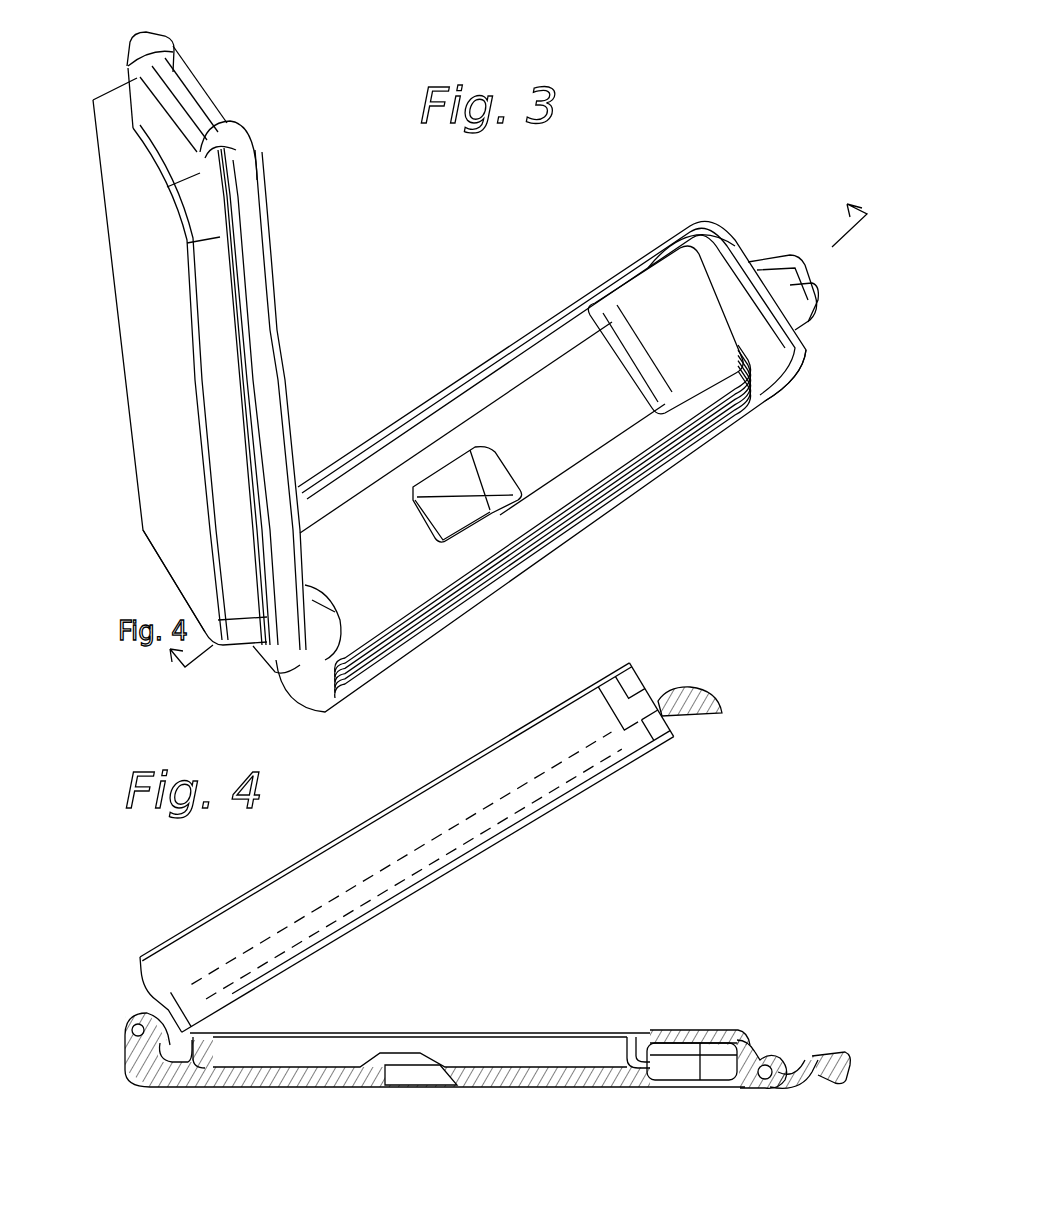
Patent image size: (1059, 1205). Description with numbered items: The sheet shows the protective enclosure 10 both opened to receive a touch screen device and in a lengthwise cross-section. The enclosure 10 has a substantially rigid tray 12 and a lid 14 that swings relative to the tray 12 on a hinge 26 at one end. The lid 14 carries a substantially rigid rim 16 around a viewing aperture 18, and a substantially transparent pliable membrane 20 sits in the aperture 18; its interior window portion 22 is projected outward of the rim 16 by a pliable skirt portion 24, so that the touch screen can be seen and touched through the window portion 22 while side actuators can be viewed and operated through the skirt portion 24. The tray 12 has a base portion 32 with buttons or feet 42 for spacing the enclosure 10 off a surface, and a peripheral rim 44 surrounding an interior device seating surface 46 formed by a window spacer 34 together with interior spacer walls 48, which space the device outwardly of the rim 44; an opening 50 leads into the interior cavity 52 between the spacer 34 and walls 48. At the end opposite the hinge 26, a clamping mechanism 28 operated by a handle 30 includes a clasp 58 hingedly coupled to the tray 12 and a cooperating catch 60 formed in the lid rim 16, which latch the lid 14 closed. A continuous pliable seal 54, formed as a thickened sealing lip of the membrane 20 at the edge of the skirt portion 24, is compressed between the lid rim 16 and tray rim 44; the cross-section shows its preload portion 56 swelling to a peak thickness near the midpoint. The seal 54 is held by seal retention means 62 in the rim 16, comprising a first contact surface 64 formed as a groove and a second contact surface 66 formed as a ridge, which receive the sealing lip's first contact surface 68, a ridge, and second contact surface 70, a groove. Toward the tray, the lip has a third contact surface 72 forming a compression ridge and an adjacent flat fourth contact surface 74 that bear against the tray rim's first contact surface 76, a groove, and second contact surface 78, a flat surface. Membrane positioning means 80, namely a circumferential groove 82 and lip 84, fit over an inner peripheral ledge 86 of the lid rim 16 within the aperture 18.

In FIG. 3, the protective enclosure 10 is at (751, 203).
In FIG. 4, the protective enclosure 10 is at (764, 595).
In FIG. 3, the tray 12 is at (733, 432).
In FIG. 4, the tray 12 is at (300, 1087).
In FIG. 3, the lid 14 is at (135, 50).
In FIG. 4, the lid 14 is at (125, 1027).
In FIG. 3, the rim 16 is at (250, 270).
In FIG. 4, the rim 16 is at (670, 717).
In FIG. 3, the viewing aperture 18 is at (227, 193).
In FIG. 4, the viewing aperture 18 is at (620, 730).
In FIG. 3, the pliable membrane 20 is at (163, 567).
In FIG. 4, the pliable membrane 20 is at (600, 683).
In FIG. 3, the interior window portion 22 is at (138, 347).
In FIG. 4, the interior window portion 22 is at (407, 797).
In FIG. 3, the pliable skirt portion 24 is at (222, 363).
In FIG. 4, the pliable skirt portion 24 is at (446, 832).
In FIG. 4, the hinge 26 is at (137, 1033).
In FIG. 3, the clamping mechanism 28 is at (806, 357).
In FIG. 4, the clamping mechanism 28 is at (773, 1097).
In FIG. 3, the handle 30 is at (800, 294).
In FIG. 4, the handle 30 is at (837, 1063).
In FIG. 3, the base portion 32 is at (519, 454).
In FIG. 4, the base portion 32 is at (515, 1083).
In FIG. 3, the window spacer 34 is at (651, 344).
In FIG. 4, the window spacer 34 is at (672, 1033).
In FIG. 4, the feet 42 is at (190, 1090).
In FIG. 3, the peripheral rim 44 is at (658, 243).
In FIG. 4, the peripheral rim 44 is at (767, 1053).
In FIG. 3, the interior device seating surface 46 is at (598, 448).
In FIG. 4, the interior device seating surface 46 is at (627, 1032).
In FIG. 3, the interior spacer walls 48 is at (545, 425).
In FIG. 4, the interior spacer walls 48 is at (493, 1032).
In FIG. 3, the opening 50 is at (572, 375).
In FIG. 4, the opening 50 is at (450, 1050).
In FIG. 3, the interior cavity 52 is at (616, 314).
In FIG. 4, the interior cavity 52 is at (559, 1045).
In FIG. 3, the pliable seal 54 is at (277, 300).
In FIG. 4, the pliable seal 54 is at (683, 733).
In FIG. 3, the preload portion 56 is at (290, 410).
In FIG. 4, the preload portion 56 is at (430, 890).
In FIG. 3, the clasp 58 is at (760, 265).
In FIG. 4, the clasp 58 is at (803, 1093).
In FIG. 3, the catch 60 is at (187, 103).
In FIG. 4, the catch 60 is at (707, 700).
In FIG. 4, the seal retention means 62 is at (680, 720).
In FIG. 4, the first contact surface 64 is at (677, 717).
In FIG. 4, the second contact surface 66 is at (667, 740).
In FIG. 4, the first contact surface 68 is at (673, 723).
In FIG. 4, the second contact surface 70 is at (668, 747).
In FIG. 4, the third contact surface 72 is at (683, 733).
In FIG. 4, the fourth contact surface 74 is at (680, 737).
In FIG. 4, the first contact surface 76 is at (758, 1053).
In FIG. 4, the second contact surface 78 is at (747, 1043).
In FIG. 4, the membrane positioning means 80 is at (178, 997).
In FIG. 4, the circumferential groove 82 is at (160, 963).
In FIG. 4, the lip 84 is at (153, 1012).
In FIG. 4, the inner peripheral ledge 86 is at (157, 1040).